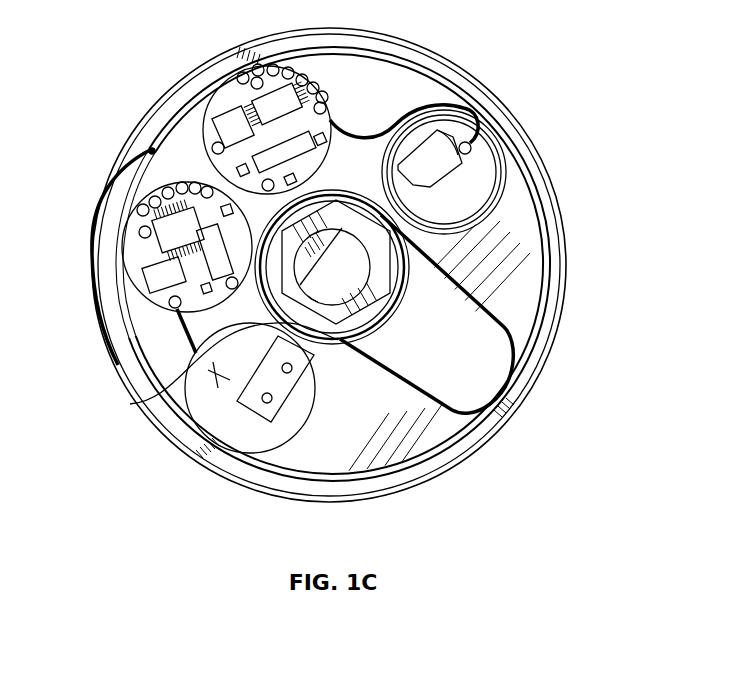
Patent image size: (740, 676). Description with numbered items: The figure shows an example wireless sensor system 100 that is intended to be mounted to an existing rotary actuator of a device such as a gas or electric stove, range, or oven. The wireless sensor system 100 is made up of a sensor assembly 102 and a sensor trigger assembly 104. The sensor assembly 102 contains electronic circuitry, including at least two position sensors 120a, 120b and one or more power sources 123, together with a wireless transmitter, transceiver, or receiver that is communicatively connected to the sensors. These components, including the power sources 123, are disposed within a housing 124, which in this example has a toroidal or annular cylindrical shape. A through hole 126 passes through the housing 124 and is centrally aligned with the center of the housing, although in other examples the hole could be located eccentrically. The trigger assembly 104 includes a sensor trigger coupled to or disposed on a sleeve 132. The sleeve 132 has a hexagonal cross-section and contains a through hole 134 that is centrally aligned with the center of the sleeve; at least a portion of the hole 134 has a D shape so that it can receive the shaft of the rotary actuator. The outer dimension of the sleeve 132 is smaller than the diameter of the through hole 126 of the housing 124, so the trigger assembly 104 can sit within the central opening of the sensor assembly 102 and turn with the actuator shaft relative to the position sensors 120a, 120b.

The wireless sensor system 100 is at (440, 32).
The sensor assembly 102 is at (192, 70).
The sensor trigger assembly 104 is at (377, 291).
The position sensor 120a is at (142, 281).
The position sensor 120b is at (233, 95).
The power source 123 is at (490, 110).
The housing 124 is at (140, 137).
The through hole 126 is at (130, 404).
The sleeve 132 is at (364, 233).
The through hole 134 is at (340, 275).